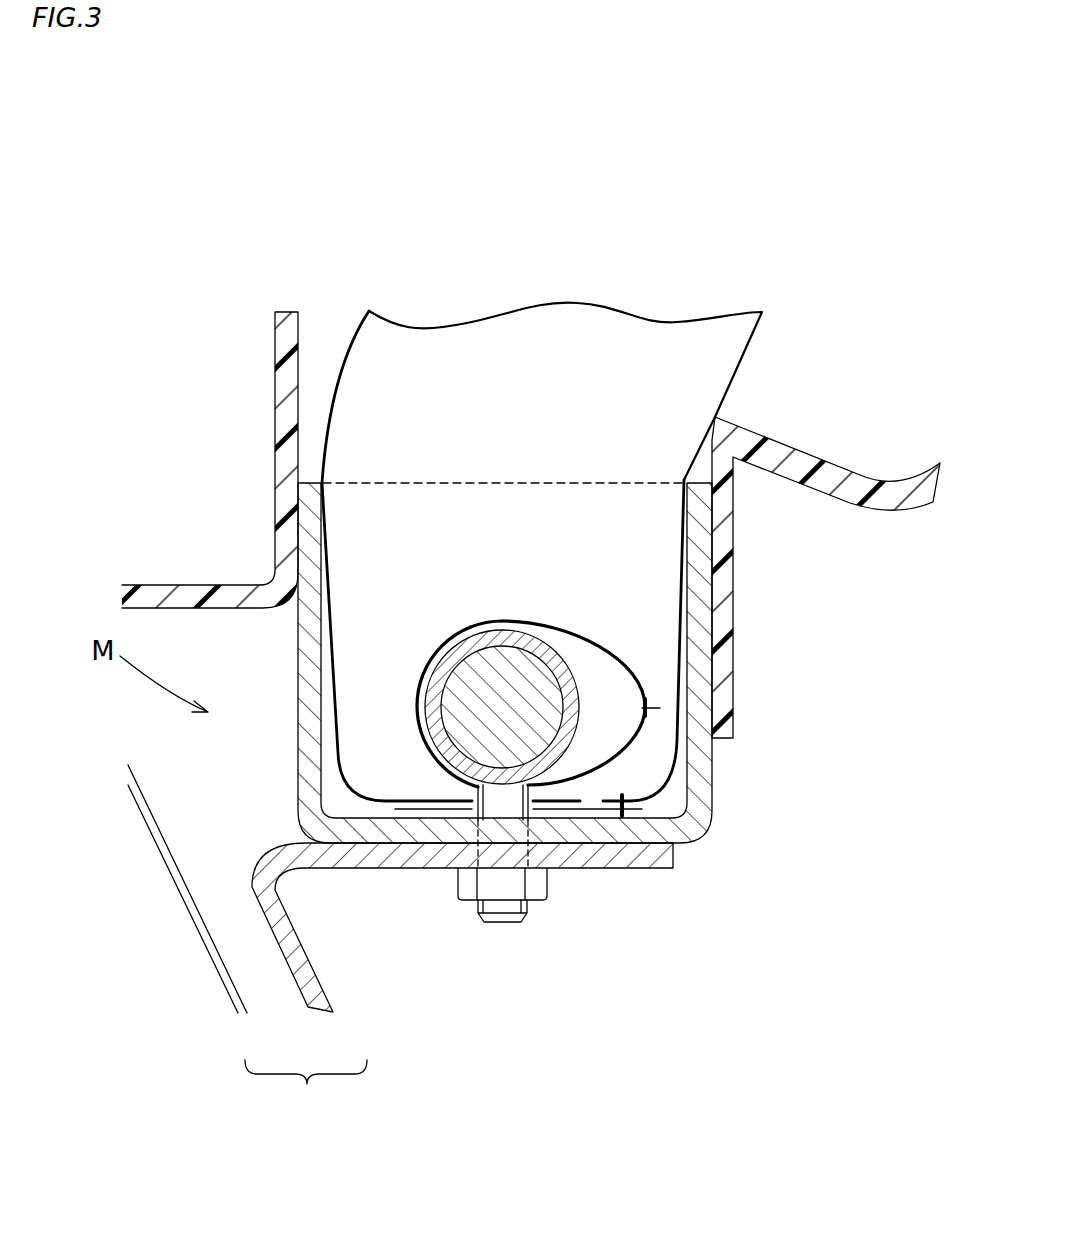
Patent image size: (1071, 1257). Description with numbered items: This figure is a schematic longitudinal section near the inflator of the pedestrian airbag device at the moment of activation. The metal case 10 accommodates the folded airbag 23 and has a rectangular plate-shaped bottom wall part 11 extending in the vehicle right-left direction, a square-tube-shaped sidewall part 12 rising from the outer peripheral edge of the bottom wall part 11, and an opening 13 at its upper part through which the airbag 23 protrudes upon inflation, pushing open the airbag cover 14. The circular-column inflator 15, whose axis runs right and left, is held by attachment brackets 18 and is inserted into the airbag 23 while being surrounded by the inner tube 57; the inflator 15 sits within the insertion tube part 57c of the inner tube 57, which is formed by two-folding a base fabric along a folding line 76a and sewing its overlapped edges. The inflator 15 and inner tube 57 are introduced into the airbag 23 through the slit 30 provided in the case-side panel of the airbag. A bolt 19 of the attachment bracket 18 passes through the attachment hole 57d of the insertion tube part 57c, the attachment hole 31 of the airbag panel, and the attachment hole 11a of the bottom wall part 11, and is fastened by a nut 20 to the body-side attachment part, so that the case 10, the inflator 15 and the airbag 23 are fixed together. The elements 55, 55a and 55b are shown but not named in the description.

The case 10 is at (306, 1090).
The bottom wall part 11 is at (370, 850).
The attachment hole 11a is at (527, 820).
The sidewall part 12 is at (302, 763).
The opening 13 is at (360, 483).
The airbag cover 14 is at (273, 375).
The inflator 15 is at (475, 663).
The attachment bracket 18 is at (520, 638).
The bolt 19 is at (502, 915).
The nut 20 is at (470, 880).
The airbag 23 is at (727, 363).
The slit 30 is at (590, 800).
The attachment hole 31 is at (470, 800).
The fixing plate 55 is at (593, 818).
The projection 55a is at (625, 817).
The fastening portion 55b is at (448, 868).
The inner tube 57 is at (600, 640).
The insertion tube part 57c is at (598, 687).
The attachment hole 57d is at (528, 792).
The folding line 76a is at (415, 710).